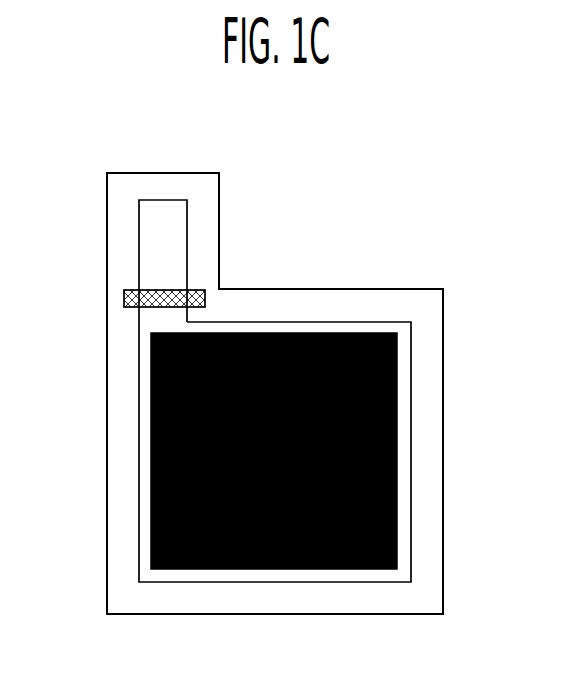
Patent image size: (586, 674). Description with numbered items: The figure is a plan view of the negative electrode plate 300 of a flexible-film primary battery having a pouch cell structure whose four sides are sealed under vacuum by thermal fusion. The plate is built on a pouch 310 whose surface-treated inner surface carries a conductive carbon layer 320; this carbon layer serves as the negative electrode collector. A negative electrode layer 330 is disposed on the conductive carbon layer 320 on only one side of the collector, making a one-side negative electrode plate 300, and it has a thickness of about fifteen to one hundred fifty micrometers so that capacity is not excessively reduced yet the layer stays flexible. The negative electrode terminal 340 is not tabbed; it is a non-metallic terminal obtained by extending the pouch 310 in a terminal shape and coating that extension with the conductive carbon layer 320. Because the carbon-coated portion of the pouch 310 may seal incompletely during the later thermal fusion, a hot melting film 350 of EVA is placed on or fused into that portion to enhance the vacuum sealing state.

The negative electrode plate 300 is at (357, 258).
The pouch 310 is at (423, 300).
The conductive carbon layer 320 is at (410, 500).
The negative electrode layer 330 is at (150, 472).
The negative electrode terminal 340 is at (187, 200).
The hot melting film 350 is at (197, 299).